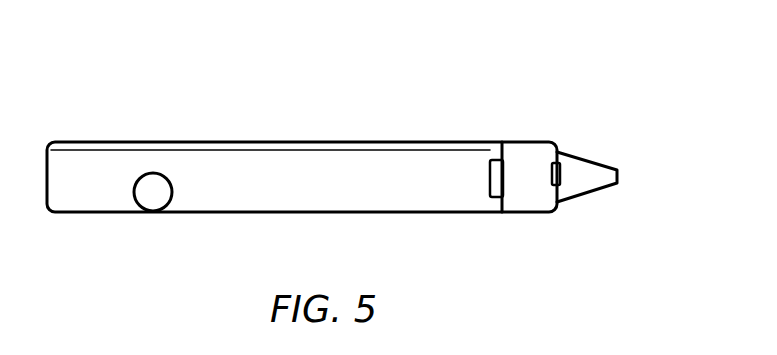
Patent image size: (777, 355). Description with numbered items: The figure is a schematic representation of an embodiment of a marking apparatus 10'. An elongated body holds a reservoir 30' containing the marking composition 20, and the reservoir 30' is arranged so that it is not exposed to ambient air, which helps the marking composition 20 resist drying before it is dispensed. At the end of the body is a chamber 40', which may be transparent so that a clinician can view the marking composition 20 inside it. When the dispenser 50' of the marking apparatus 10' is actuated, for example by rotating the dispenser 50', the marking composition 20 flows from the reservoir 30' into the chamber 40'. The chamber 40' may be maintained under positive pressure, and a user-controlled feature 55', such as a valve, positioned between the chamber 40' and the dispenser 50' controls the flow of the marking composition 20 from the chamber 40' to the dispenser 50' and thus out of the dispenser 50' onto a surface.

The marking apparatus 10' is at (362, 133).
The marking composition 20 is at (215, 177).
The reservoir 30' is at (270, 109).
The chamber 40' is at (553, 150).
The dispenser 50' is at (624, 155).
The user-controlled feature 55' is at (599, 205).